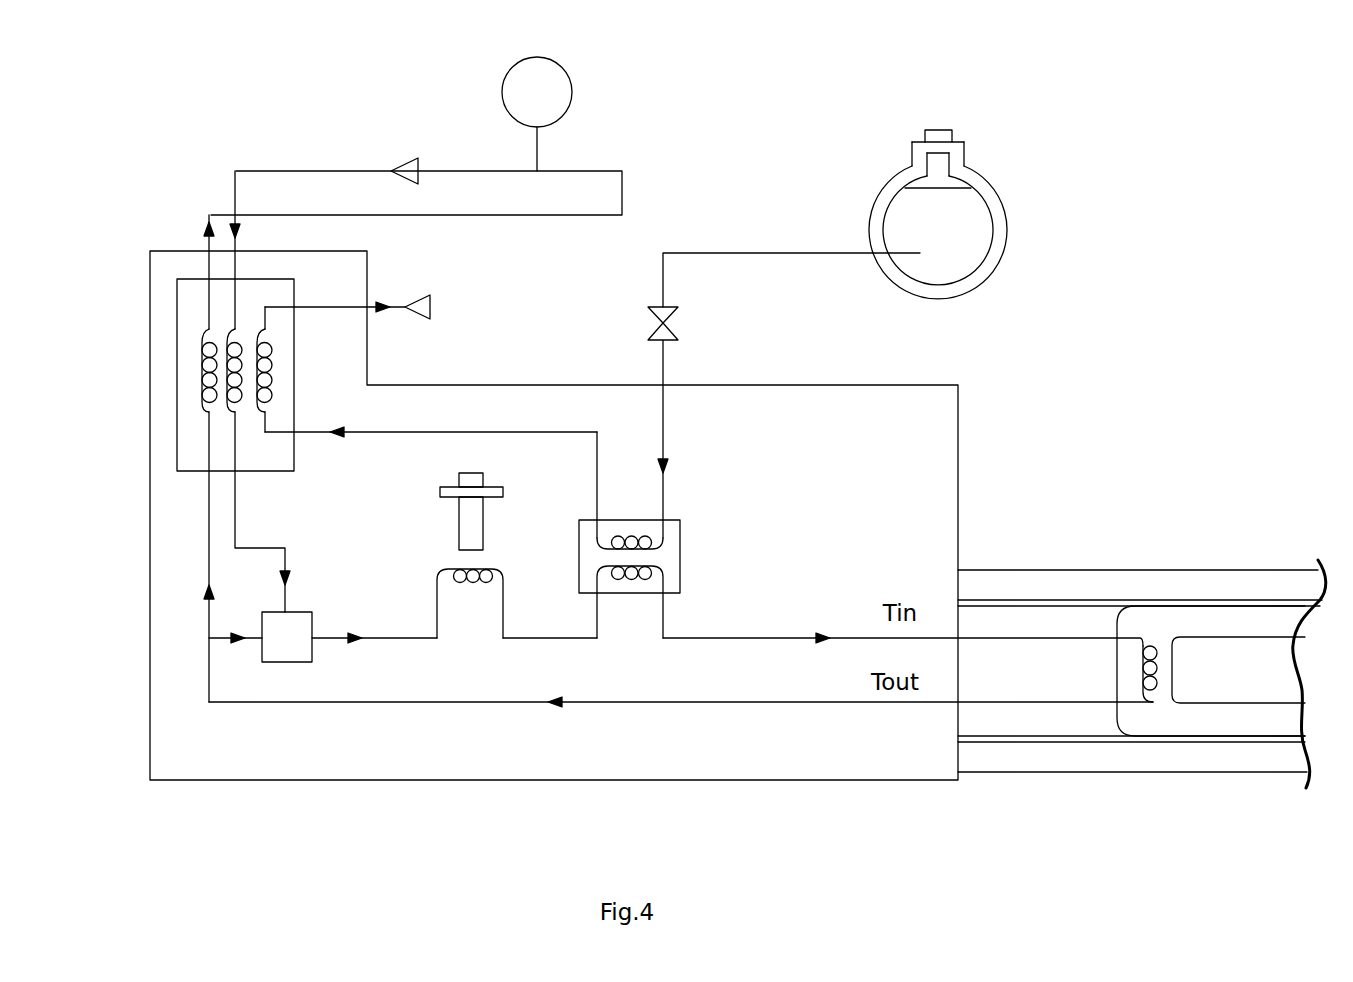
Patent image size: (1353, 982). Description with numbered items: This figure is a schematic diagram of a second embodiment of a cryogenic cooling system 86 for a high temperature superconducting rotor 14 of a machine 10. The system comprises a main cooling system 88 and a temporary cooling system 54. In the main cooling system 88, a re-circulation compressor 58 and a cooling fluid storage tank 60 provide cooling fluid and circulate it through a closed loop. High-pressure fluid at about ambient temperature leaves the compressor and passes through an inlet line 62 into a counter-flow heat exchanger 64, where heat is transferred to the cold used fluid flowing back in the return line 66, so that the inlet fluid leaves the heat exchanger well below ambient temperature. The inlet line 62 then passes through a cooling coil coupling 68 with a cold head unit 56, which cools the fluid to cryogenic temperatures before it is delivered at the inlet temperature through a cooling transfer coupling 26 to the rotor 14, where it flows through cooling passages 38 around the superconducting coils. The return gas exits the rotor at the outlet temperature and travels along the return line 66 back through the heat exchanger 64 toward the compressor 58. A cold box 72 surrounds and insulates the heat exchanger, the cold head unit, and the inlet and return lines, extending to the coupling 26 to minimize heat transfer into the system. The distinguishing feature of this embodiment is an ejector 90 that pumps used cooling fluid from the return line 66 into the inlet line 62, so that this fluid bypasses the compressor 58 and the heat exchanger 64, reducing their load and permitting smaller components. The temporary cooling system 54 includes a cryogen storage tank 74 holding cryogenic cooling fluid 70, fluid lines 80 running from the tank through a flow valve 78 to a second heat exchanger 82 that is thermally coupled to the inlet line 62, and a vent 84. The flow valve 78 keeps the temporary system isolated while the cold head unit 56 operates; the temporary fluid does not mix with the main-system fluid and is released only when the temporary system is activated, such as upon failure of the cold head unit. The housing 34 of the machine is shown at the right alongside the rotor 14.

The machine 10 is at (1218, 587).
The rotor 14 is at (1238, 689).
The cooling transfer coupling 26 is at (963, 655).
The housing 34 is at (1225, 715).
The cooling passages 38 is at (1142, 642).
The temporary cooling system 54 is at (778, 334).
The cold head unit 56 is at (459, 520).
The re-circulation compressor 58 is at (400, 168).
The cooling fluid storage tank 60 is at (571, 76).
The inlet line 62 is at (244, 171).
The counter-flow heat exchanger 64 is at (293, 399).
The return line 66 is at (385, 217).
The cooling coil coupling 68 is at (437, 573).
The cryogenic cooling fluid 70 is at (933, 237).
The cold box 72 is at (478, 384).
The cryogen storage tank 74 is at (998, 248).
The flow valve 78 is at (656, 320).
The fluid lines 80 is at (407, 433).
The second heat exchanger 82 is at (673, 521).
The vent 84 is at (413, 316).
The cryogenic cooling system 86 is at (703, 196).
The main cooling system 88 is at (444, 681).
The ejector 90 is at (297, 612).